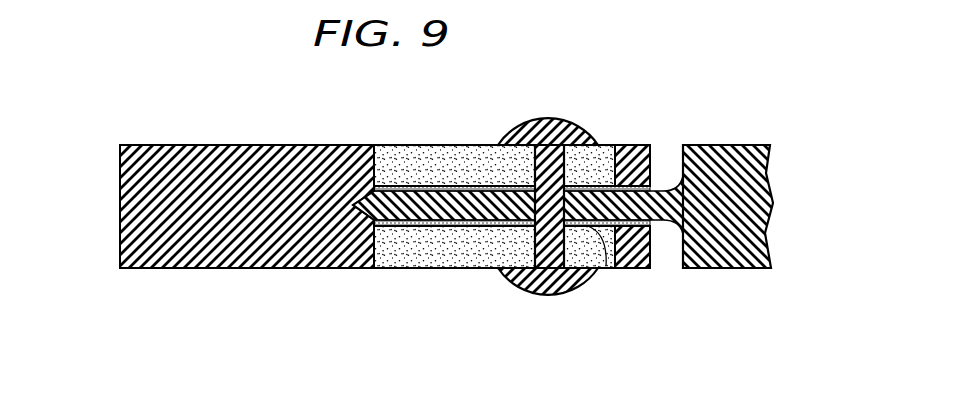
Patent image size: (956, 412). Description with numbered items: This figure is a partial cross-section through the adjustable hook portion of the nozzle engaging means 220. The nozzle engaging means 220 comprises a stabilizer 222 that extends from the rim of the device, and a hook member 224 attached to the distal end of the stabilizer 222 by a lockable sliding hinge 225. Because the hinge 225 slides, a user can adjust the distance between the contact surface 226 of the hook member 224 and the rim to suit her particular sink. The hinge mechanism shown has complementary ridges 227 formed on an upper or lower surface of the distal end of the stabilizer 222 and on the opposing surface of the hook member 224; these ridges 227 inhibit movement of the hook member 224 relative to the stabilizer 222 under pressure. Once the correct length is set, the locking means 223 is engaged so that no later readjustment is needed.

The nozzle engaging means 220 is at (186, 271).
The stabilizer 222 is at (718, 136).
The locking means 223 is at (505, 126).
The hook member 224 is at (210, 139).
The lockable sliding hinge 225 is at (578, 114).
The contact surface 226 is at (318, 260).
The complementary ridges 227 is at (598, 259).